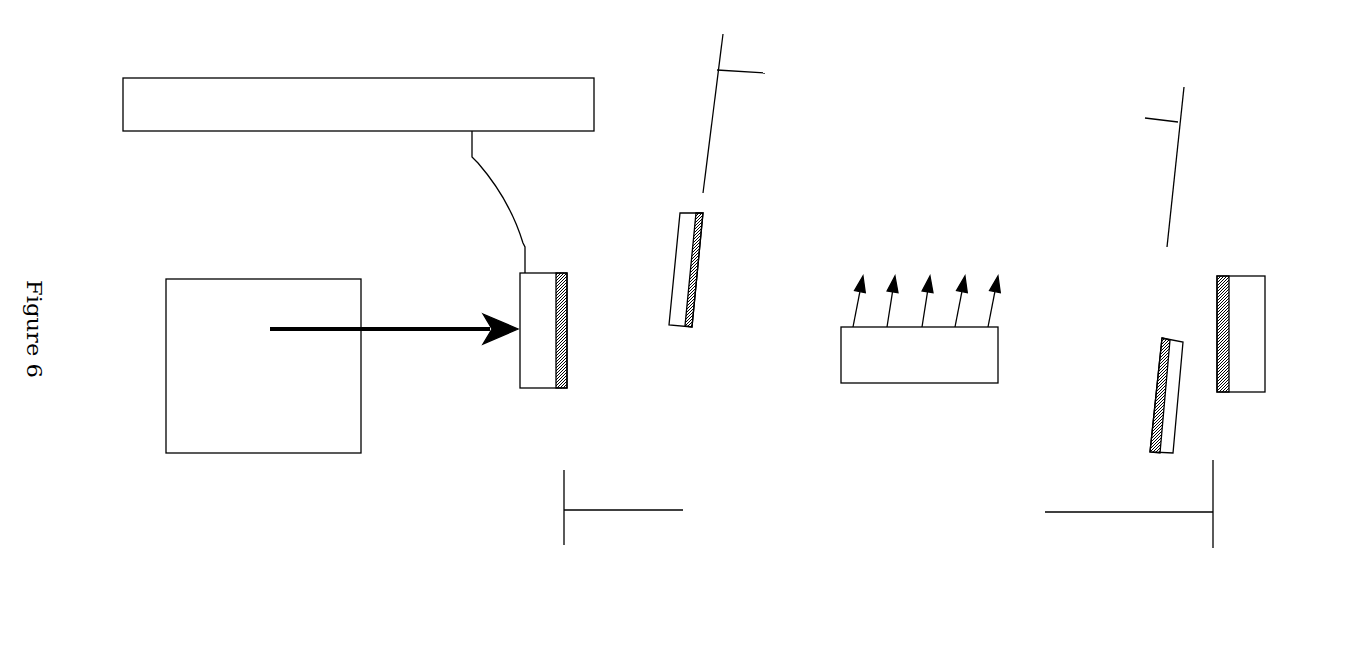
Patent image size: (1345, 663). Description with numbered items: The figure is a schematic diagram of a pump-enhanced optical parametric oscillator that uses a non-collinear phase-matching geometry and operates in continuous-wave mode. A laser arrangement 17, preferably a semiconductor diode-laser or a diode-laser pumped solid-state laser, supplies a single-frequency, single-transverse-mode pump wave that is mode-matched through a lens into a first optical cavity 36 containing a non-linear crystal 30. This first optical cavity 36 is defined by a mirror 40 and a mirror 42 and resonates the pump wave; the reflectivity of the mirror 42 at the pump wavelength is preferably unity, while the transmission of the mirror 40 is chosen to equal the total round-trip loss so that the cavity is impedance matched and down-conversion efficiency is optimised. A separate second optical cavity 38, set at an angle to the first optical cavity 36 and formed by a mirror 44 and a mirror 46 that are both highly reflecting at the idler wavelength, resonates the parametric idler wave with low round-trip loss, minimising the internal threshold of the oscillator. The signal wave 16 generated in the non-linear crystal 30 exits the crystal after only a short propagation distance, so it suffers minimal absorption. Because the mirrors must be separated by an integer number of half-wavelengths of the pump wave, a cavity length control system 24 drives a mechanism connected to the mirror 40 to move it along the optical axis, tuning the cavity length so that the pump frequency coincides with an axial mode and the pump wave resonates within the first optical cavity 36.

The signal wave 16 is at (928, 276).
The laser arrangement 17 is at (245, 330).
The control system 24 is at (358, 175).
The non-linear crystal 30 is at (962, 372).
The optical cavity 36 is at (888, 504).
The optical cavity 38 is at (943, 140).
The mirror 40 is at (543, 283).
The mirror 42 is at (1242, 287).
The mirror 44 is at (680, 312).
The mirror 46 is at (1153, 427).